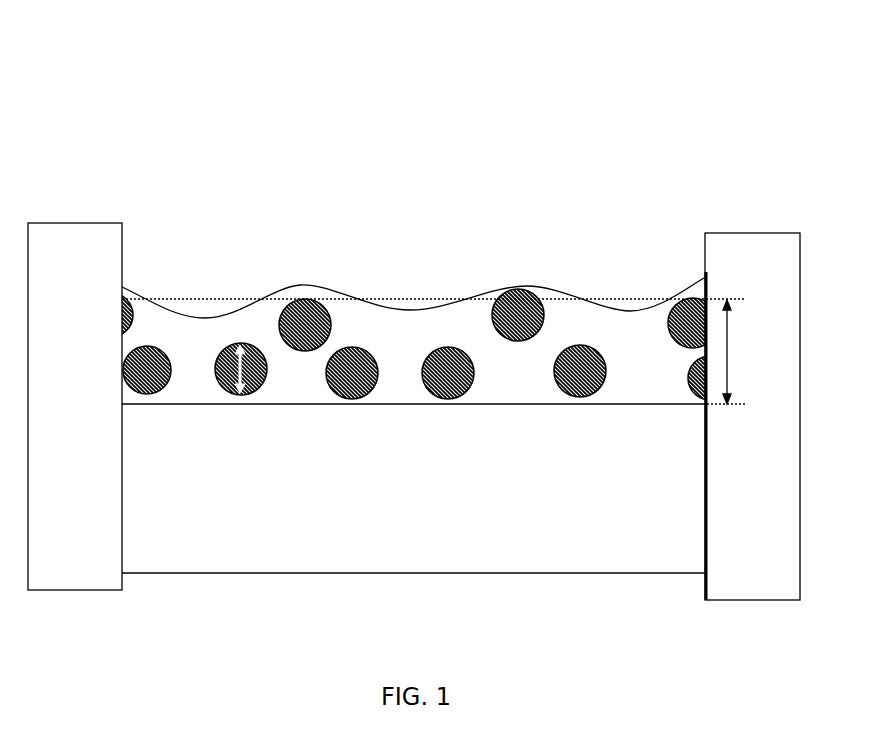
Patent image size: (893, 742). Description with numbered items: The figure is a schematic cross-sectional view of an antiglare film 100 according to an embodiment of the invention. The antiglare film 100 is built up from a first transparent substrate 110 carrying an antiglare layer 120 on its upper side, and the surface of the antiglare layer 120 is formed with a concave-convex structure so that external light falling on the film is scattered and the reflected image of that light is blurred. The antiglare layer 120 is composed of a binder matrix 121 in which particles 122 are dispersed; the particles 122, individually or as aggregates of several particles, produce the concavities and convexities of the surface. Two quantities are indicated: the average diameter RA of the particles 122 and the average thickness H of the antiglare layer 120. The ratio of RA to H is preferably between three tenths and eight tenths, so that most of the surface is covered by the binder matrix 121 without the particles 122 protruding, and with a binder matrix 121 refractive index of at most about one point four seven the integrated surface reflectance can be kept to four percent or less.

The antiglare film 100 is at (452, 34).
The first transparent substrate 110 is at (682, 521).
The antiglare layer 120 is at (702, 287).
The binder matrix 121 is at (603, 325).
The particles 122 is at (307, 317).
The average diameter of the particles RA is at (220, 360).
The average thickness of the antiglare layer H is at (440, 351).